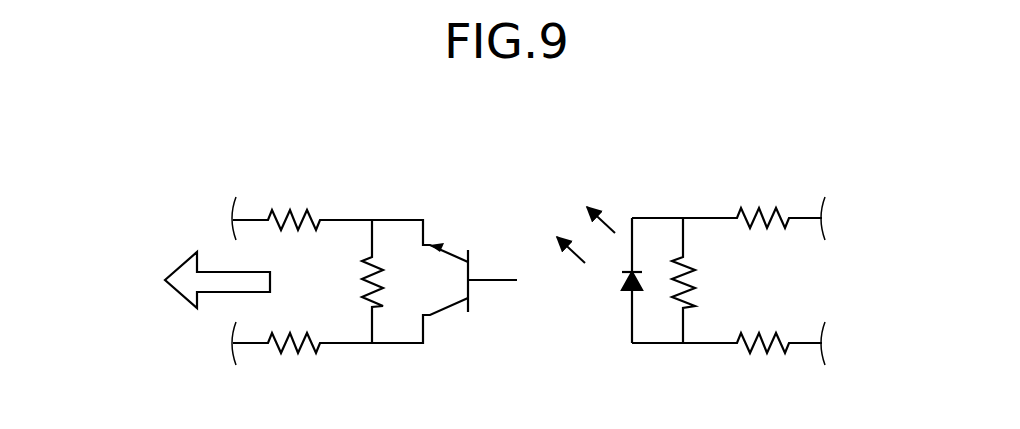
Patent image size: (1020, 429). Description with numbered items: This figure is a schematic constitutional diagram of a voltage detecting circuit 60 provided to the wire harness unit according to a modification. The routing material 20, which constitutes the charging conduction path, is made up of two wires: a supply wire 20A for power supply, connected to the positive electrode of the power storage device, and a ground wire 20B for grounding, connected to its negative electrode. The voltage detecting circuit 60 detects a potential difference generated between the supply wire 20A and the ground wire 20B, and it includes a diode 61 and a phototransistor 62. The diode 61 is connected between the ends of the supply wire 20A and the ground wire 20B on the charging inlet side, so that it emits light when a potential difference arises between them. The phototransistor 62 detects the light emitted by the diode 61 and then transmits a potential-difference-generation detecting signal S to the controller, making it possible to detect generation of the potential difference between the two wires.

The routing material 20 is at (732, 235).
The supply wire 20A is at (713, 343).
The ground wire 20B is at (695, 160).
The voltage detecting circuit 60 is at (546, 193).
The diode 61 is at (618, 298).
The phototransistor 62 is at (483, 318).
The potential-difference-generation detecting signal S is at (228, 292).